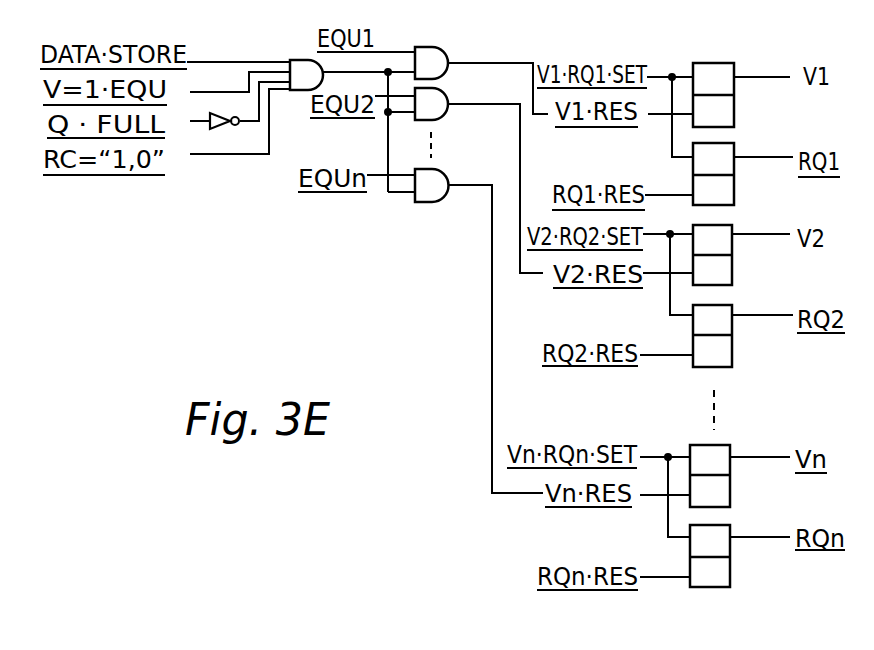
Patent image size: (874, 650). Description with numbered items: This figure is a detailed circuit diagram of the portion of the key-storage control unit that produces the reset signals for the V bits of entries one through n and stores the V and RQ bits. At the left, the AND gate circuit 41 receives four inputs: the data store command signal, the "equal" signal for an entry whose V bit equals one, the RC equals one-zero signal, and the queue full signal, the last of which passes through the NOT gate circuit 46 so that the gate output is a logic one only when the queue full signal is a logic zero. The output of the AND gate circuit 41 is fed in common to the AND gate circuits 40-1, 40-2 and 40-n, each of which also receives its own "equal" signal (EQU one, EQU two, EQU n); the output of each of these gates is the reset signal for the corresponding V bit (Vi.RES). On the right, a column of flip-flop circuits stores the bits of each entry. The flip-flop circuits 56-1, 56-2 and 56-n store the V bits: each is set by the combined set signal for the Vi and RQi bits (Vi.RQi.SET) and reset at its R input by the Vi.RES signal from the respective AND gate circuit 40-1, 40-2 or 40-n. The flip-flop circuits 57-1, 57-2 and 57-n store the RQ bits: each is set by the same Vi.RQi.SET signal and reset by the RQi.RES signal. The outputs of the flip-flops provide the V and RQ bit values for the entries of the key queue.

The AND gate circuit 41 is at (308, 58).
The NOT gate circuit 46 is at (220, 129).
The AND gate circuit 40-1 is at (438, 47).
The AND gate circuit 40-2 is at (446, 89).
The AND gate circuit 40-n is at (445, 170).
The flip-flop circuit 56-1 is at (725, 63).
The flip-flop circuit 57-1 is at (733, 143).
The flip-flop circuit 56-2 is at (732, 226).
The flip-flop circuit 57-2 is at (729, 305).
The flip-flop circuit 56-n is at (726, 445).
The flip-flop circuit 57-n is at (725, 525).